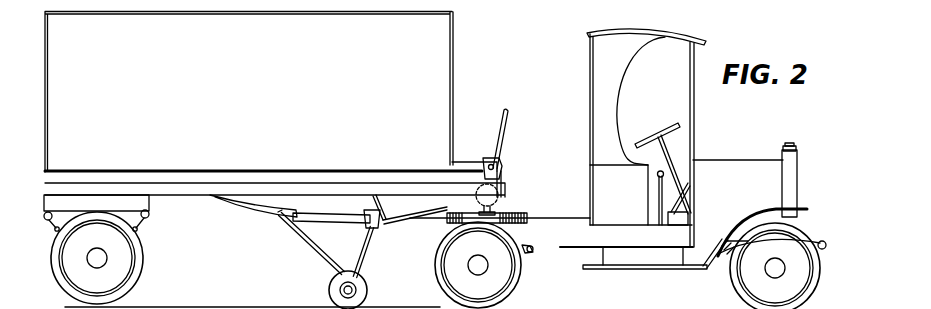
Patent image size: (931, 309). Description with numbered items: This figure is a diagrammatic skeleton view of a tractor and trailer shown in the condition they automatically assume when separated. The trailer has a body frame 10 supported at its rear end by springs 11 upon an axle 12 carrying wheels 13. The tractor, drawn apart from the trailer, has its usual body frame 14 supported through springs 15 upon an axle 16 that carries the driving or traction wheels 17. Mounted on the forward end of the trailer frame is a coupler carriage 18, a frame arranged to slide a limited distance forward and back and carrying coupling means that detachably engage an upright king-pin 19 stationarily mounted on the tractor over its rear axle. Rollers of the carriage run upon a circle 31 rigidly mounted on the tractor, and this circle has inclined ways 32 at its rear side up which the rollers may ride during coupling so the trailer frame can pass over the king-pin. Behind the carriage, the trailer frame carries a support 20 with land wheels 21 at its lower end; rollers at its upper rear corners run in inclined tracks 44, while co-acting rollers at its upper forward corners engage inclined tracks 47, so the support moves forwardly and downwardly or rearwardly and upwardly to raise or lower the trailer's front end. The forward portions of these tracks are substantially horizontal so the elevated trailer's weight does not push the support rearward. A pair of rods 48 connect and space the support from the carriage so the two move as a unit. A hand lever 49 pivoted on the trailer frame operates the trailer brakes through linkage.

The body frame 10 is at (178, 193).
The springs 11 is at (140, 230).
The axle 12 is at (97, 258).
The wheels 13 is at (133, 279).
The body frame 14 is at (575, 236).
The springs 15 is at (533, 253).
The axle 16 is at (480, 265).
The driving or traction wheels 17 is at (509, 294).
The coupler carriage 18 is at (425, 190).
The king-pin 19 is at (505, 206).
The support 20 is at (318, 226).
The land wheels 21 is at (370, 296).
The circle 31 is at (528, 215).
The inclined ways 32 is at (396, 228).
The inclined tracks 44 is at (244, 203).
The inclined tracks 47 is at (356, 202).
The rods 48 is at (393, 226).
The hand lever 49 is at (505, 136).